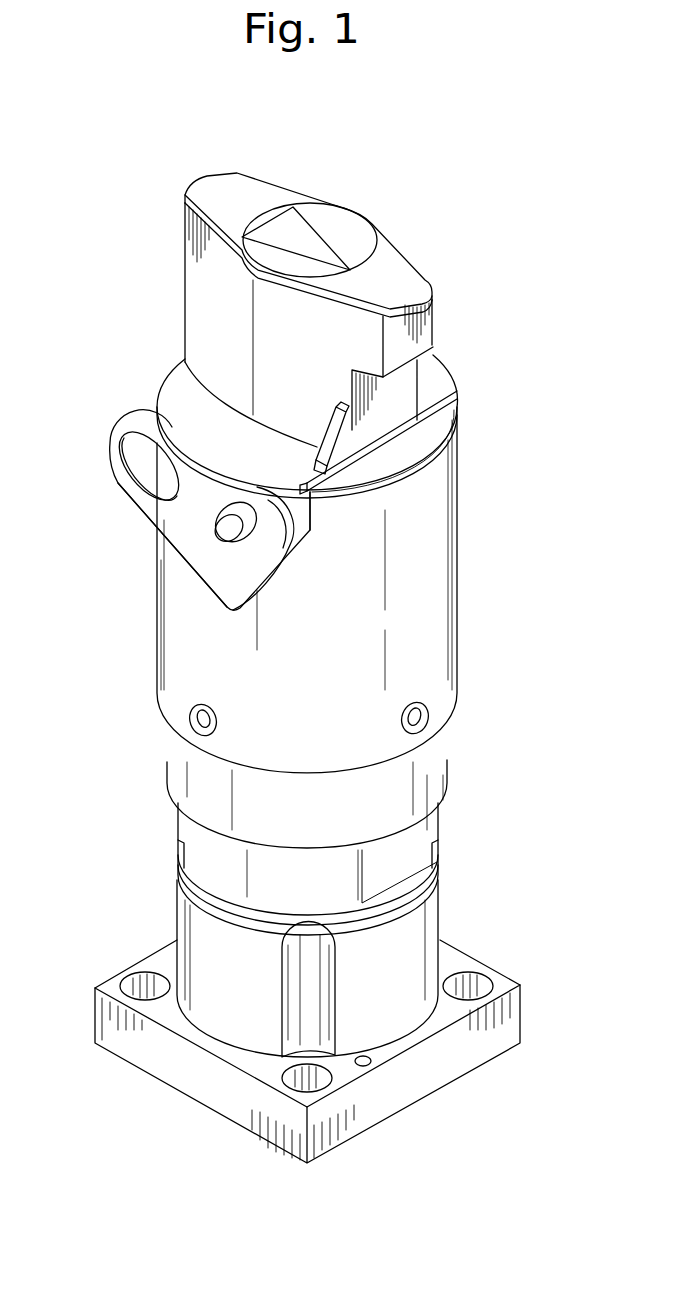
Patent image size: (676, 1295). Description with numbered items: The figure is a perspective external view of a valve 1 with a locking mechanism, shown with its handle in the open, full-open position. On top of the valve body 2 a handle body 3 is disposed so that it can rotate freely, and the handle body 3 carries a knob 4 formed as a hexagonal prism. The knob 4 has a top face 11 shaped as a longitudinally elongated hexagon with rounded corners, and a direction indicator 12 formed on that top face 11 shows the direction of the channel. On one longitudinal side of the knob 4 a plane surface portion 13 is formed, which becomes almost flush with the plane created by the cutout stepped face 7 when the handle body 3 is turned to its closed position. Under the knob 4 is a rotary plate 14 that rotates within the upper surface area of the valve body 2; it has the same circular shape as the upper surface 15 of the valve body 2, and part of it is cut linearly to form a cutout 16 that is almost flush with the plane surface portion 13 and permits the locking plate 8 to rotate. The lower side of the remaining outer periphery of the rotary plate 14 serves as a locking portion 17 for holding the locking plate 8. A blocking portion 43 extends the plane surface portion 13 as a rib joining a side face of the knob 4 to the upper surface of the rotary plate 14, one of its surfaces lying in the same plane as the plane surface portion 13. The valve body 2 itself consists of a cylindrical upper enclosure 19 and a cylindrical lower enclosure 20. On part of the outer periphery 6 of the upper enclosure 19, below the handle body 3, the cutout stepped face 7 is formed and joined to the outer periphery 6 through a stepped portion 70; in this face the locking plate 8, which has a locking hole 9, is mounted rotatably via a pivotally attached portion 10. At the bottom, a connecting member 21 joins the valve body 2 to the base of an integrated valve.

The valve 1 is at (448, 197).
The valve body 2 is at (483, 598).
The handle body 3 is at (179, 335).
The knob 4 is at (207, 270).
The outer periphery 6 is at (433, 640).
The cutout stepped face 7 is at (300, 513).
The locking plate 8 is at (172, 517).
The locking hole 9 is at (137, 483).
The pivotally attached portion 10 is at (213, 530).
The top face 11 is at (220, 190).
The direction indicator 12 is at (313, 210).
The plane surface portion 13 is at (400, 387).
The rotary plate 14 is at (172, 392).
The upper surface 15 is at (433, 437).
The cutout 16 is at (437, 412).
The locking portion 17 is at (197, 475).
The upper enclosure 19 is at (193, 653).
The lower enclosure 20 is at (200, 768).
The connecting member 21 is at (452, 1065).
The blocking portion 43 is at (340, 443).
The stepped portion 70 is at (210, 603).